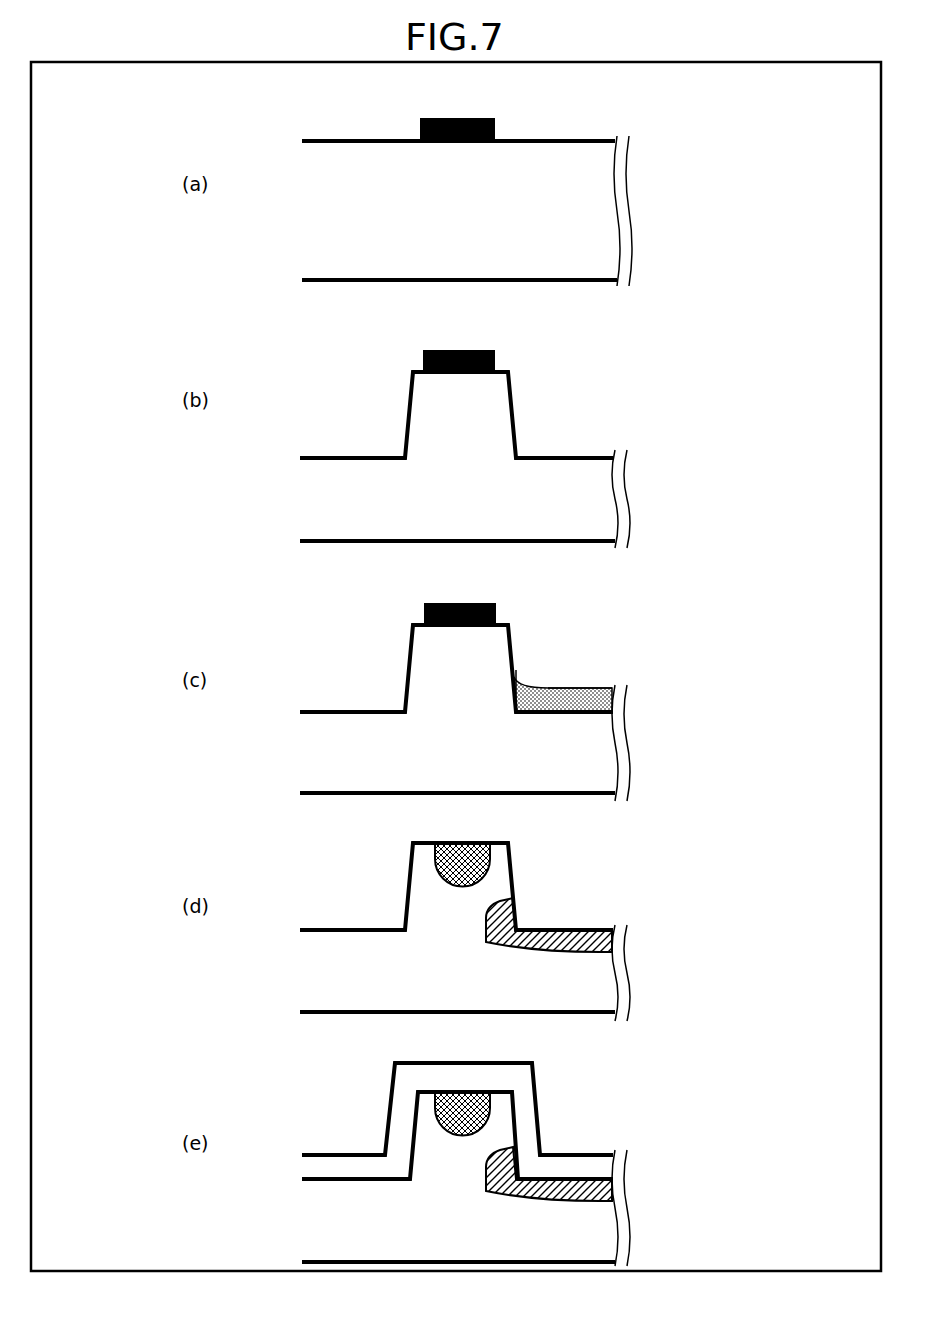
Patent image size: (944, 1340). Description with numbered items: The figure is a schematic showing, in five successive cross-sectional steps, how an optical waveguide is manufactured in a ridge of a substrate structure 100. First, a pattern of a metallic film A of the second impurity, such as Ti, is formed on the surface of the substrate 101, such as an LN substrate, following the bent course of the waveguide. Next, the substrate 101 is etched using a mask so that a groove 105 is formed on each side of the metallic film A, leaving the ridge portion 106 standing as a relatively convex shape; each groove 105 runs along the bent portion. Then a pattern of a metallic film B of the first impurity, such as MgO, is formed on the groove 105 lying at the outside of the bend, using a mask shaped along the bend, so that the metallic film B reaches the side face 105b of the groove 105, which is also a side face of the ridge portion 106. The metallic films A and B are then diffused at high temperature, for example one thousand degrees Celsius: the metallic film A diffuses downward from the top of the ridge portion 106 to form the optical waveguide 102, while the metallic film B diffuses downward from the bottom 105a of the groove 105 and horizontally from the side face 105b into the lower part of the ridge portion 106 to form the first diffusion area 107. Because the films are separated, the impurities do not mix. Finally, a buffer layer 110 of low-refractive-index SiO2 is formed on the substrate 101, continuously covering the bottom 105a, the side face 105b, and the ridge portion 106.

The semiconductor substrate structure 100 is at (653, 120).
The substrate 101 is at (318, 188).
The optical waveguide 102 is at (462, 882).
The groove 105 is at (351, 430).
The bottom of the groove 105a is at (555, 708).
The side face of the groove 105b is at (517, 668).
The ridge portion 106 is at (482, 417).
The first diffusion area 107 is at (537, 929).
The buffer layer 110 is at (408, 1094).
The metallic film A is at (457, 131).
The metallic film B is at (592, 694).